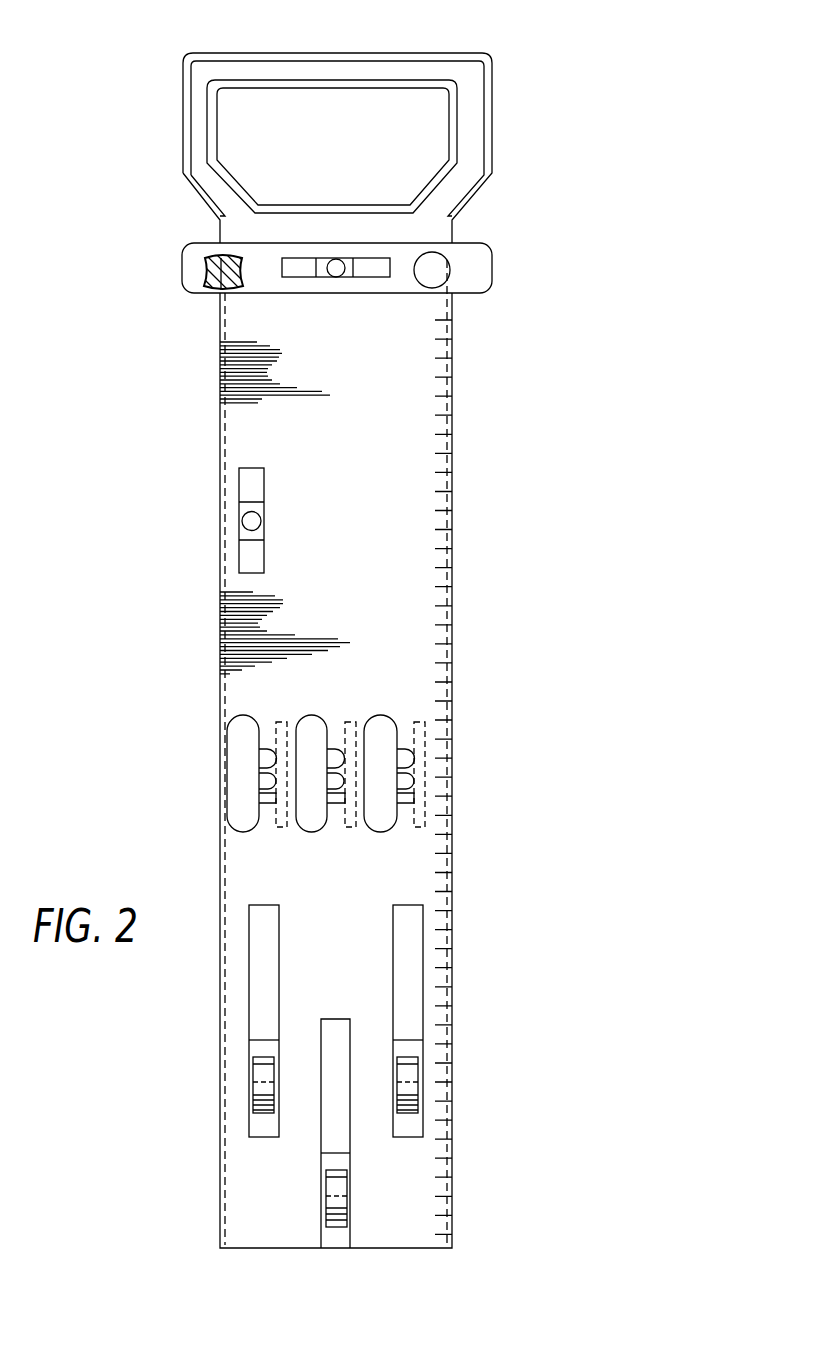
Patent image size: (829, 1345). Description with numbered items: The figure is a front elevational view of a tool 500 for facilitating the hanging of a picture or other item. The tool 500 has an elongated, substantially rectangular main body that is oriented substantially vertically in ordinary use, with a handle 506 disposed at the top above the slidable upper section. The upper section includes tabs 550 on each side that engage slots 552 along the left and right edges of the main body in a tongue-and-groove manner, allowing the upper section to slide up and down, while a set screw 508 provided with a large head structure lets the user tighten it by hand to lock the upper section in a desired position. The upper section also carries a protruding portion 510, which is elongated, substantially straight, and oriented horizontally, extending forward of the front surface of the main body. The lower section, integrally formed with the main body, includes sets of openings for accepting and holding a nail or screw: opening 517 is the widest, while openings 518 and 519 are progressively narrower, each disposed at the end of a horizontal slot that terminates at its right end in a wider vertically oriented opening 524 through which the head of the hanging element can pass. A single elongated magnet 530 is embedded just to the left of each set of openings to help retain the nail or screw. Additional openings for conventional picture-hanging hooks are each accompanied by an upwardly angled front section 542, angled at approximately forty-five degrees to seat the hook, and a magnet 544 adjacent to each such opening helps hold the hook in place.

The tool 500 is at (118, 453).
The handle 506 is at (363, 72).
The set screw 508 is at (432, 283).
The protruding portion 510 is at (480, 267).
The opening 517 is at (337, 757).
The opening 518 is at (338, 780).
The opening 519 is at (342, 797).
The vertically oriented opening 524 is at (310, 725).
The magnet 530 is at (282, 822).
The upwardly angled front section 542 is at (340, 1162).
The magnet 544 is at (330, 1200).
The tab 550 is at (221, 290).
The slot 552 is at (222, 437).